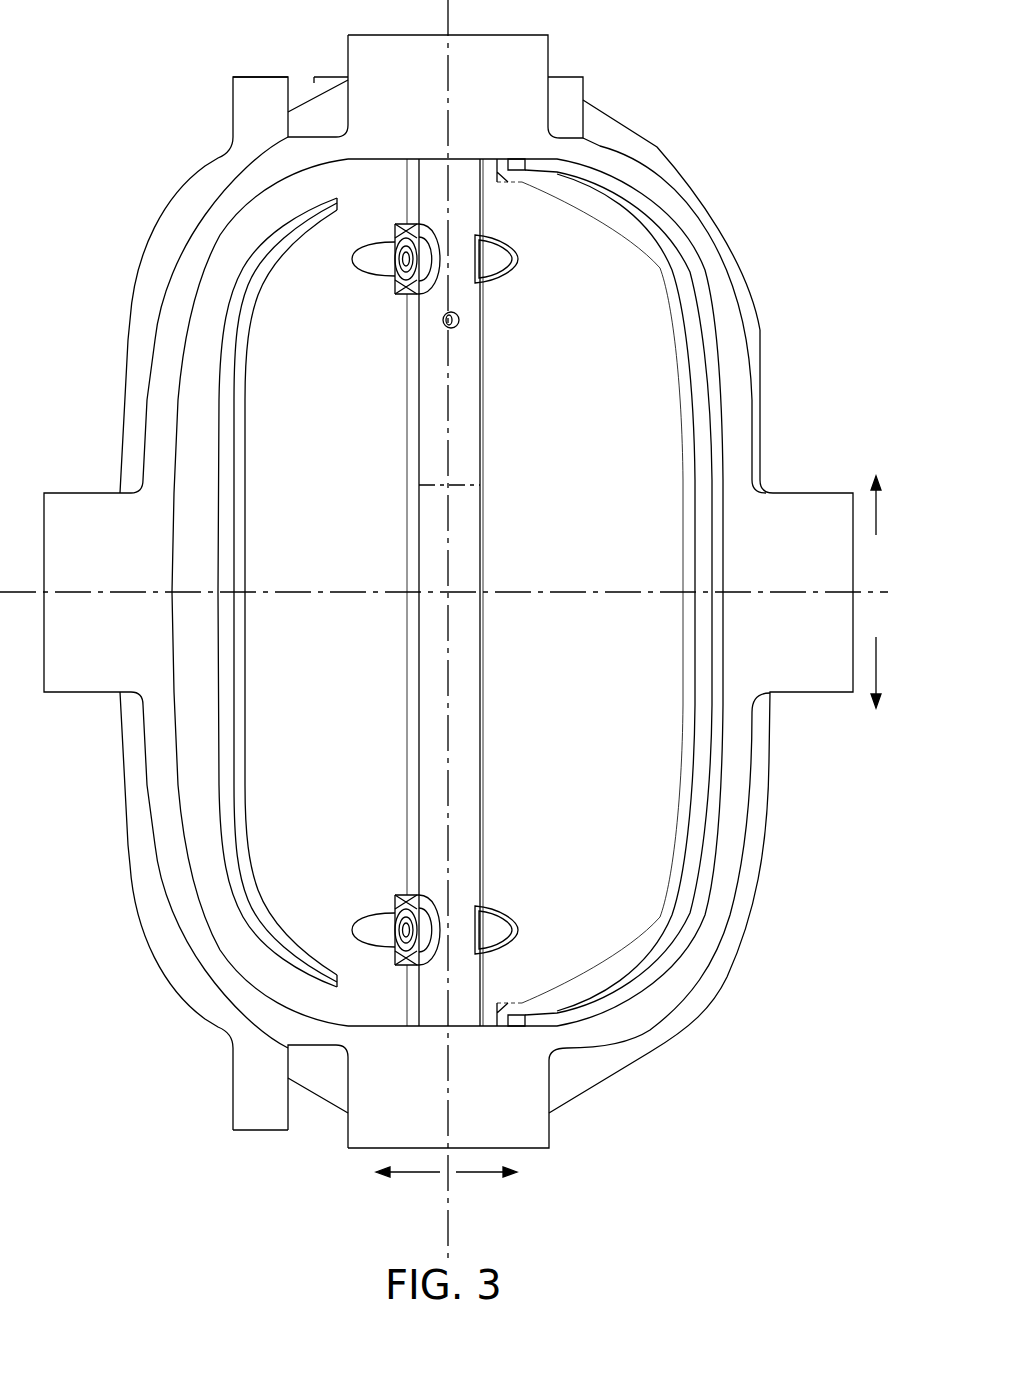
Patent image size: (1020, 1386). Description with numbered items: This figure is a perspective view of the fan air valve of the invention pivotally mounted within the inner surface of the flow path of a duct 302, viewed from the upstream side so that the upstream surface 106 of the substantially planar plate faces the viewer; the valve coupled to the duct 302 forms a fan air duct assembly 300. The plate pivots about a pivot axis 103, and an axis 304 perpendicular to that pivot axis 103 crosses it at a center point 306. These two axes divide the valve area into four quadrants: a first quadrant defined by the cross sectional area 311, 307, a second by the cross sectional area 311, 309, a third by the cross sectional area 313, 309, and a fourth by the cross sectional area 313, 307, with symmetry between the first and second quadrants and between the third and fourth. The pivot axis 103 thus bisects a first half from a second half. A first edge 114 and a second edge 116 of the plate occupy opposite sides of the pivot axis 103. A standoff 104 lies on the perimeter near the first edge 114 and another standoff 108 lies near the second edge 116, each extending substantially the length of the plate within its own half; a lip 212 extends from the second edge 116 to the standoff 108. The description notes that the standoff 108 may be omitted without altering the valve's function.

The pressure vessel assembly 300 is at (777, 98).
The duct 302 is at (625, 158).
The first edge 114 is at (726, 550).
The standoff 104 is at (690, 877).
The upstream surface 106 is at (630, 925).
The standoff 108 is at (277, 947).
The lip 212 is at (218, 922).
The second edge 116 is at (173, 481).
The axis 304 is at (873, 592).
The center point 306 is at (448, 592).
The cross sectional area 307 is at (878, 497).
The cross sectional area 309 is at (878, 676).
The cross sectional area 311 is at (487, 1172).
The cross sectional area 313 is at (403, 1172).
The pivot axis 103 is at (448, 1238).